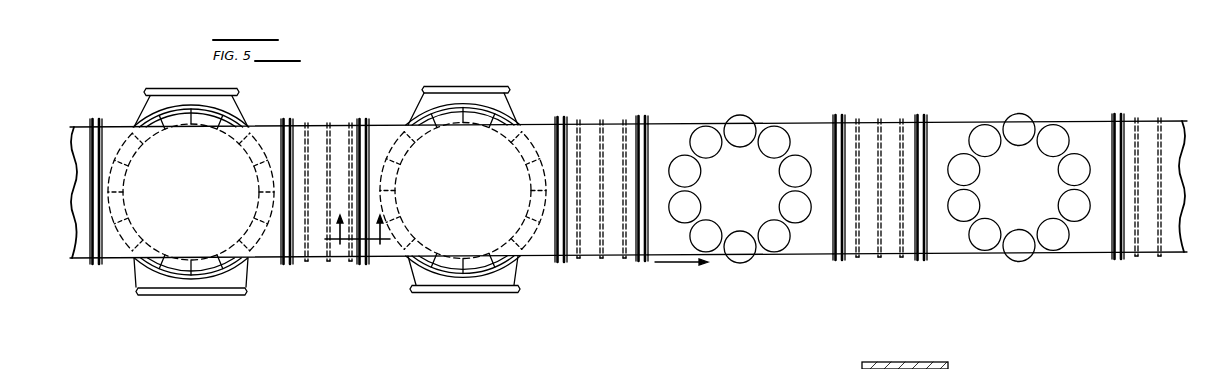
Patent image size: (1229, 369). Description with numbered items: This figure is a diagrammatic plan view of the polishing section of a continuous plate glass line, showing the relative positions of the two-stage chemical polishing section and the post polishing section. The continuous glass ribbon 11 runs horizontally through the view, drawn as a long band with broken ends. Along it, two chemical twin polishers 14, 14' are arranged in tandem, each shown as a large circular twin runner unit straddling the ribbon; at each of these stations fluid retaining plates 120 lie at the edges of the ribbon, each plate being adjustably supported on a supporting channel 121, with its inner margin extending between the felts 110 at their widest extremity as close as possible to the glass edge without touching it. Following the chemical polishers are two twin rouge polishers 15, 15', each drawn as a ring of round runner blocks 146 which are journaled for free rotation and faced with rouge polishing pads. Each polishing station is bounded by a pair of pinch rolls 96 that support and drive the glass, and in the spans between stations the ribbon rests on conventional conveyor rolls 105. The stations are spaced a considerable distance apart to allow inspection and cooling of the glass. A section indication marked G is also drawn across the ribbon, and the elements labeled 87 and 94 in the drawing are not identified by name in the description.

The glass ribbon 11 is at (814, 122).
The chemical twin polisher 14 is at (191, 293).
The chemical twin polisher 14' is at (463, 293).
The twin rouge polisher 15 is at (740, 214).
The twin rouge polisher 15' is at (1019, 212).
The annular ring liner 87 is at (259, 238).
The flange 94 is at (101, 118).
The pinch rolls 96 is at (92, 119).
The conveyor rolls 105 is at (602, 120).
The felts 110 is at (129, 250).
The plate 120 is at (146, 118).
The supporting channel 121 is at (206, 89).
The round runner blocks 146 is at (728, 121).
The guillotine G is at (359, 229).